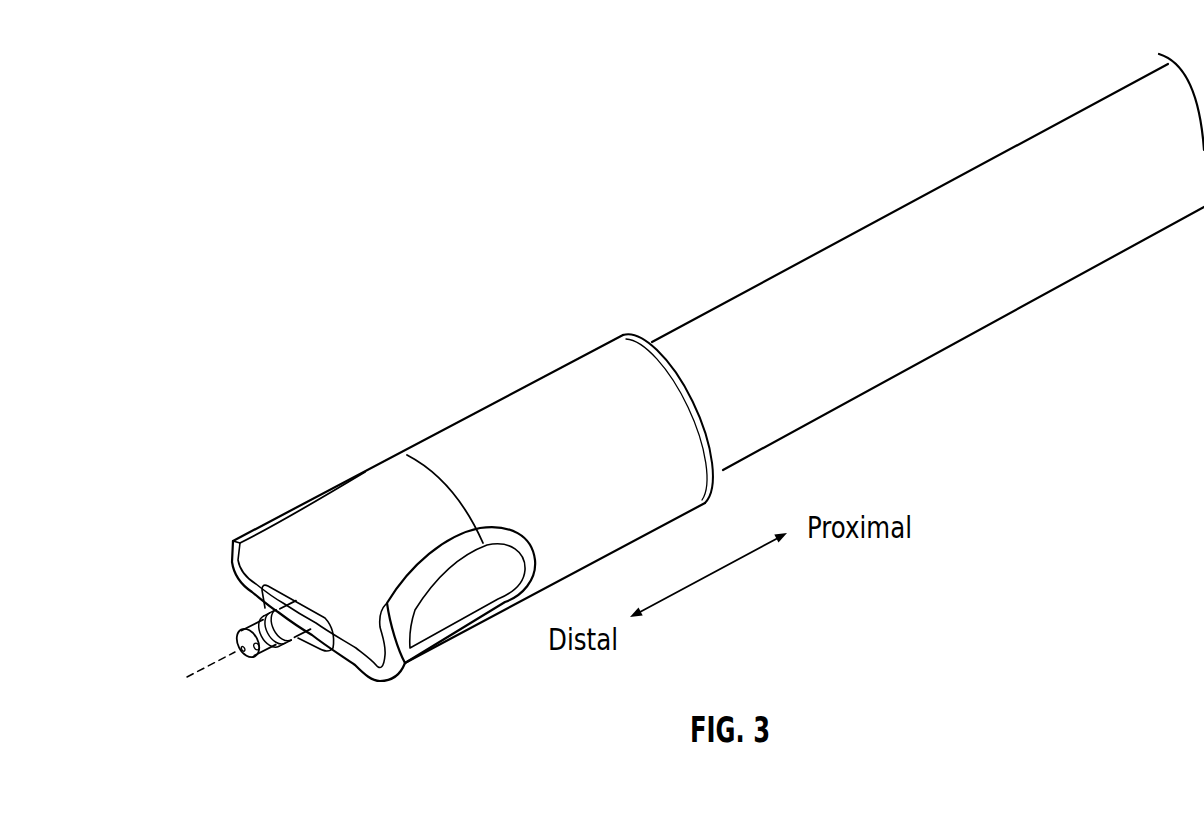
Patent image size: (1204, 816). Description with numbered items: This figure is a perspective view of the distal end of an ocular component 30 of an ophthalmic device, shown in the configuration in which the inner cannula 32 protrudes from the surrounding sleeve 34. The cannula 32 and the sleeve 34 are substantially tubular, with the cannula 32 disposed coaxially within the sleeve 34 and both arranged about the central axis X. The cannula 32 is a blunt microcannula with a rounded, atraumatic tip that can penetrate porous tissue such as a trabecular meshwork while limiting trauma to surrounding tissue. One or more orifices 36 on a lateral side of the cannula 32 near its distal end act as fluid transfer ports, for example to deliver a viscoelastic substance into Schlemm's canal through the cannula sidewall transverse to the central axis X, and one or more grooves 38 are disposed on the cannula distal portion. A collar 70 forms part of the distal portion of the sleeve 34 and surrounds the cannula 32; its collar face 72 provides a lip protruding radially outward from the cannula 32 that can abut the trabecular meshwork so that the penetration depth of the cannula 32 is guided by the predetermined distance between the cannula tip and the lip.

The ocular component 30 is at (680, 390).
The cannula 32 is at (252, 657).
The sleeve 34 is at (547, 375).
The orifices 36 is at (262, 650).
The grooves 38 is at (272, 618).
The collar 70 is at (344, 507).
The collar face 72 is at (238, 563).
The central axis X is at (205, 666).